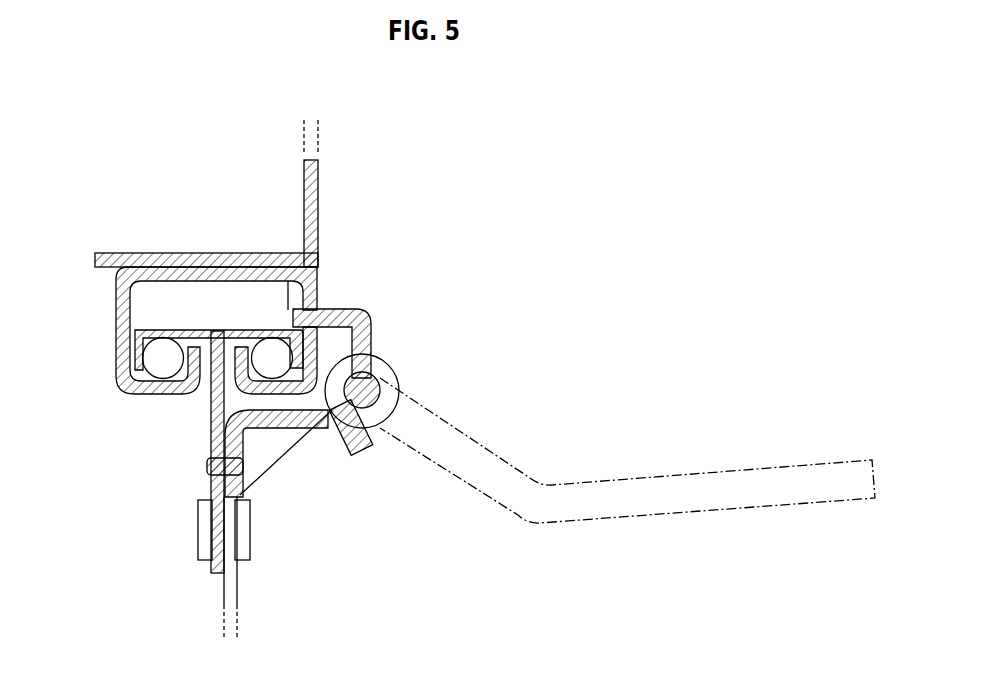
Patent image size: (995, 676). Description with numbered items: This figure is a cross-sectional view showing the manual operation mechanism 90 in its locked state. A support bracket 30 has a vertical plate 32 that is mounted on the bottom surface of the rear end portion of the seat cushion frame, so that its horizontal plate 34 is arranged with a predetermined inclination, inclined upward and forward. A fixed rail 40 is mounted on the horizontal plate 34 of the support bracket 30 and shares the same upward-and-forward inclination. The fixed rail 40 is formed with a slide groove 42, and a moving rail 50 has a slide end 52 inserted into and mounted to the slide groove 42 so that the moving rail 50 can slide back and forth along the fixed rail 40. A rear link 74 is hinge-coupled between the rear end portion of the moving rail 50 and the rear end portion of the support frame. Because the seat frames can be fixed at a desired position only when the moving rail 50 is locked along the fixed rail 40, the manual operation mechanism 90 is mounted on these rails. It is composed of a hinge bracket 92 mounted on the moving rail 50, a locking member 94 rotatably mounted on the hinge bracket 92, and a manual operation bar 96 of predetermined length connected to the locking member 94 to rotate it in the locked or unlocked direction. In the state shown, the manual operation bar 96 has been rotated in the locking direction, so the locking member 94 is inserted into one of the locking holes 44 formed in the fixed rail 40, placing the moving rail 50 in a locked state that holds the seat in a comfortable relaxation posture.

The support bracket 30 is at (285, 193).
The vertical plate 32 is at (310, 197).
The horizontal plate 34 is at (250, 255).
The fixed rail 40 is at (224, 324).
The slide groove 42 is at (145, 372).
The locking hole 44 is at (315, 285).
The moving rail 50 is at (212, 430).
The slide end 52 is at (167, 332).
The rear link 74 is at (230, 585).
The manual operation mechanism 90 is at (405, 345).
The hinge bracket 92 is at (288, 423).
The locking member 94 is at (337, 309).
The manual operation bar 96 is at (673, 477).